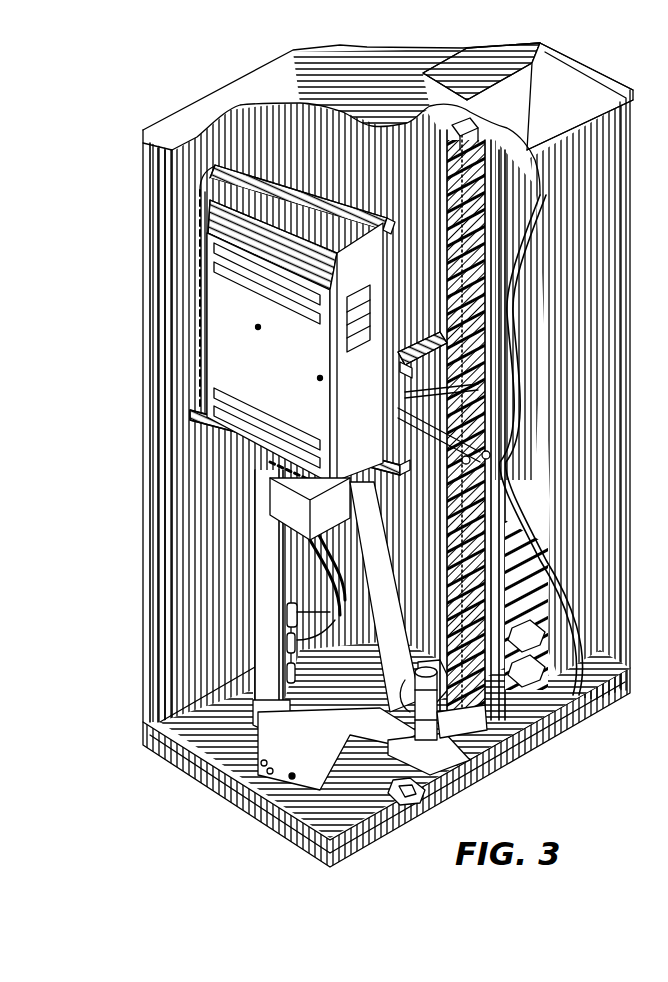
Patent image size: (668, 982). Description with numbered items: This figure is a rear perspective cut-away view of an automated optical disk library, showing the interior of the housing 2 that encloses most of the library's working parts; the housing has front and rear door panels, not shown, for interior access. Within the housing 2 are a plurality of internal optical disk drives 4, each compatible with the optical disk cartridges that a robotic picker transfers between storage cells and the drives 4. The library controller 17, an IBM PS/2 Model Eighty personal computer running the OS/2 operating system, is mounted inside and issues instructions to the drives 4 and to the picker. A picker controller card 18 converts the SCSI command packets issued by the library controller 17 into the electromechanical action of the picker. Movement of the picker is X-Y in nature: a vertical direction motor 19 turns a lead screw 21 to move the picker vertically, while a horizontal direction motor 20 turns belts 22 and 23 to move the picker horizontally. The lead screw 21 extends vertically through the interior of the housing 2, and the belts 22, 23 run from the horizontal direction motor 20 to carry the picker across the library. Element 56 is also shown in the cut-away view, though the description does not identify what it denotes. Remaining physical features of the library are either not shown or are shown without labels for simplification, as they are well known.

The housing 2 is at (627, 88).
The internal optical disk drives 4 is at (540, 672).
The library controller 17 is at (283, 366).
The picker controller card 18 is at (290, 683).
The vertical direction motor 19 is at (365, 722).
The horizontal direction motor 20 is at (472, 757).
The lead screw 21 is at (482, 452).
The belt 22 is at (510, 480).
The belt 23 is at (480, 386).
The bracket 56 is at (405, 366).